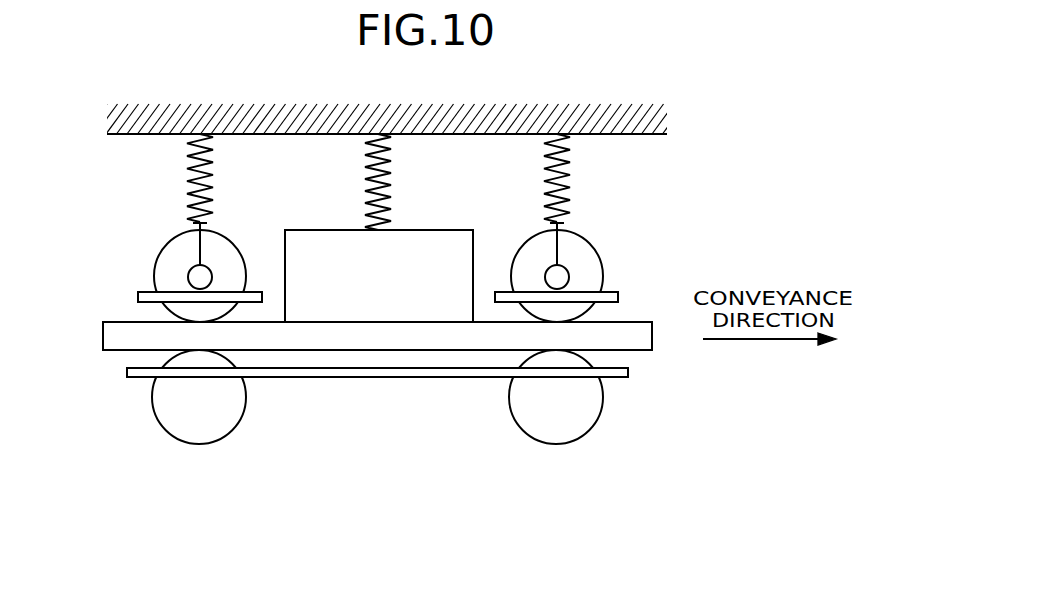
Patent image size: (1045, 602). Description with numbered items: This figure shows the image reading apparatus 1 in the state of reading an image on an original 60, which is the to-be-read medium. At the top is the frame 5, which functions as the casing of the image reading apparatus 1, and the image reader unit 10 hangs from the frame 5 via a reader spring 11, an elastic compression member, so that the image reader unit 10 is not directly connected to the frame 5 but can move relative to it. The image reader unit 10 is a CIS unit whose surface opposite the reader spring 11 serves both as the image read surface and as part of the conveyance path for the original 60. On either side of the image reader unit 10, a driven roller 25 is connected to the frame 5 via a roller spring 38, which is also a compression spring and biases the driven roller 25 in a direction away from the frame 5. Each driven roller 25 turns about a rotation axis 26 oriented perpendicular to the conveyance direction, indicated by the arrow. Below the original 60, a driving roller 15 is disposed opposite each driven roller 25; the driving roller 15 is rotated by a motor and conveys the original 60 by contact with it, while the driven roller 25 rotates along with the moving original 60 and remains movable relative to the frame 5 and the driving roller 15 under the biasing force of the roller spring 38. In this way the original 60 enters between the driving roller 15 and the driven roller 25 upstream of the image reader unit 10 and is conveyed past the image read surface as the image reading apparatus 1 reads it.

The image reading apparatus 1 is at (200, 508).
The frame 5 is at (137, 135).
The image reader unit 10 is at (301, 208).
The reader spring 11 is at (391, 173).
The driving roller 15 is at (166, 431).
The driven roller 25 is at (160, 243).
The rotation axis 26 is at (189, 276).
The roller spring 38 is at (189, 196).
The original 60 is at (428, 352).